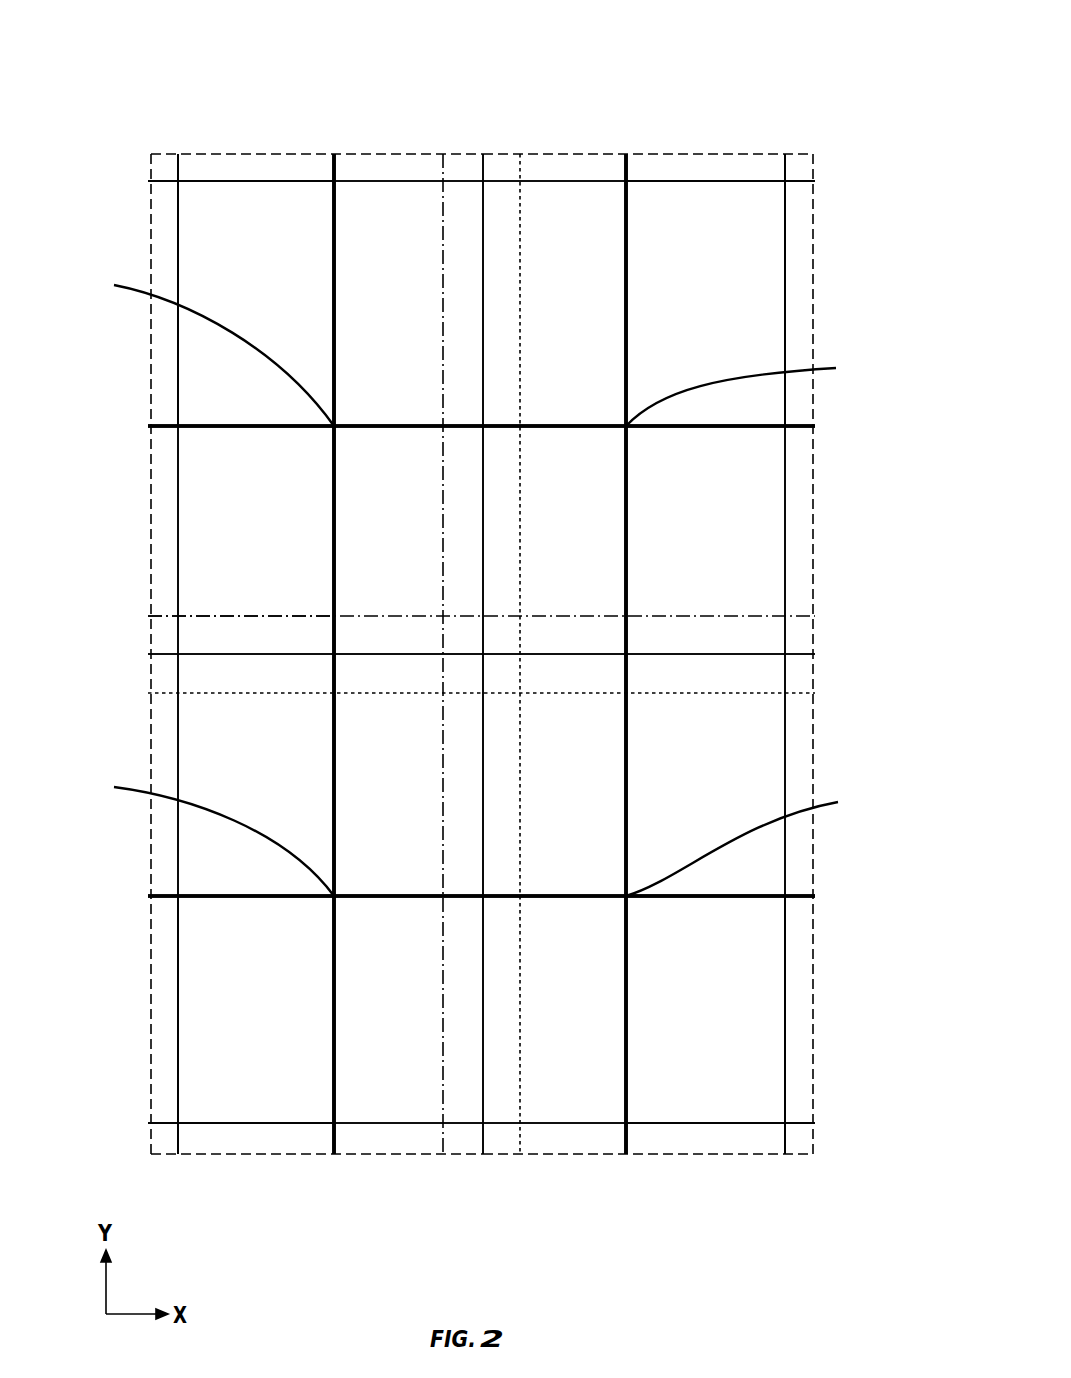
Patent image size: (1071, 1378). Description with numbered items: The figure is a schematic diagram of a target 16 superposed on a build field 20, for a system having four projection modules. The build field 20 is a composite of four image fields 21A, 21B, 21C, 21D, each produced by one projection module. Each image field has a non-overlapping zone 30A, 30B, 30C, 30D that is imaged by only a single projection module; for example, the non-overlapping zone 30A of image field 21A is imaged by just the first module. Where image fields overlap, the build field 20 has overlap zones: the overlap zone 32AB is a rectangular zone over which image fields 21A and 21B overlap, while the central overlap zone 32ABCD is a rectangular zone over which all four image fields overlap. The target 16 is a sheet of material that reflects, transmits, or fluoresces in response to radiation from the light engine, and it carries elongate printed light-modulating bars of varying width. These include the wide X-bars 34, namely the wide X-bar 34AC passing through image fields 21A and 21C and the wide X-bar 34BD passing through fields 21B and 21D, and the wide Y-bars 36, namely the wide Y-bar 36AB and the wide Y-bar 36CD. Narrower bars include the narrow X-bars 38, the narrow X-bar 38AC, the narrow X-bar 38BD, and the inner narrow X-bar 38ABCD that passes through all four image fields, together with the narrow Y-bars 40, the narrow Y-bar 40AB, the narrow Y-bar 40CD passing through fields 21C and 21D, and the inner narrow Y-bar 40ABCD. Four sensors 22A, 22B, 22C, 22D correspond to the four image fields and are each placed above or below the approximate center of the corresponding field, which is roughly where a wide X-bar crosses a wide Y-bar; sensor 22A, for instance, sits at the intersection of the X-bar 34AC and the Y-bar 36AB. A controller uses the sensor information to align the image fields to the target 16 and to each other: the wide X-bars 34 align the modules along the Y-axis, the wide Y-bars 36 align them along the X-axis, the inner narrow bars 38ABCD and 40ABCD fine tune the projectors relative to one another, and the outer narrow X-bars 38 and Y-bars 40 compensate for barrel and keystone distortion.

The target 16 is at (714, 52).
The build field 20 is at (722, 45).
The image field 21A is at (263, 1154).
The image field 21B is at (262, 153).
The image field 21C is at (687, 1154).
The image field 21D is at (693, 153).
The sensor 22A is at (209, 834).
The sensor 22B is at (203, 348).
The sensor 22C is at (751, 843).
The sensor 22D is at (750, 389).
The non-overlapping zone 30A is at (225, 1013).
The non-overlapping zone 30B is at (242, 247).
The non-overlapping zone 30C is at (743, 1057).
The non-overlapping zone 30D is at (742, 255).
The overlap zone 32AB is at (205, 633).
The overlap zone 32ABCD is at (459, 631).
The wide X-bar 34 is at (567, 426).
The wide X-bar 34AC is at (204, 896).
The wide X-bar 34BD is at (196, 426).
The wide Y-bar 36 is at (334, 757).
The wide Y-bar 36AB is at (335, 200).
The wide Y-bar 36CD is at (626, 1137).
The narrow X-bar 38 is at (302, 180).
The narrow X-bar 38AC is at (392, 1123).
The narrow X-bar 38BD is at (758, 181).
The narrow X-bar 38ABCD is at (801, 653).
The narrow Y-bar 40 is at (178, 467).
The narrow Y-bar 40AB is at (178, 219).
The narrow Y-bar 40CD is at (785, 333).
The narrow Y-bar 40ABCD is at (483, 162).